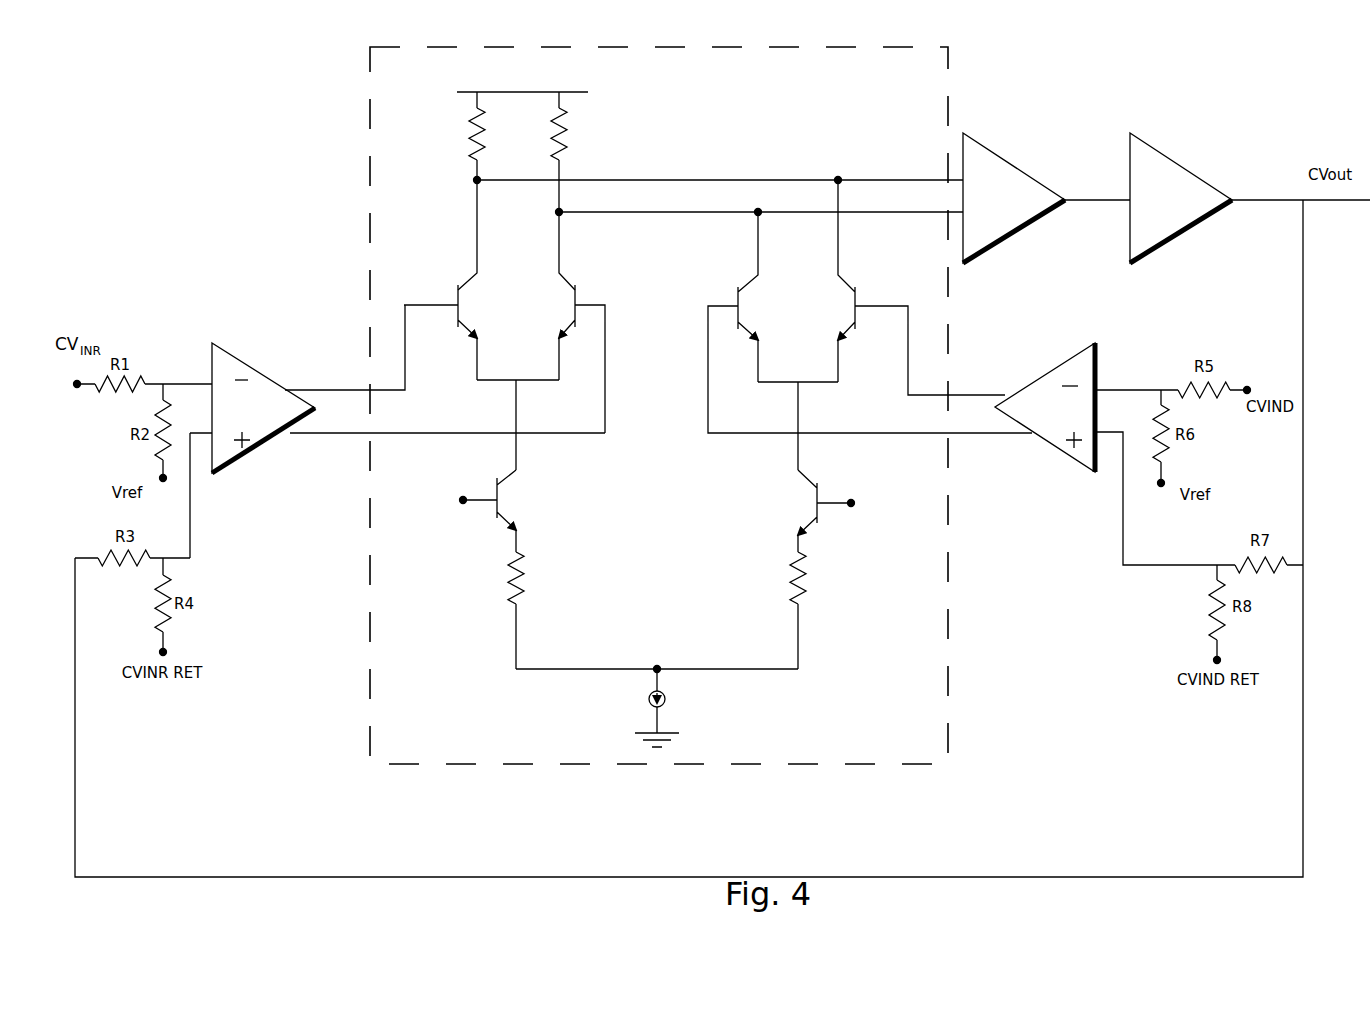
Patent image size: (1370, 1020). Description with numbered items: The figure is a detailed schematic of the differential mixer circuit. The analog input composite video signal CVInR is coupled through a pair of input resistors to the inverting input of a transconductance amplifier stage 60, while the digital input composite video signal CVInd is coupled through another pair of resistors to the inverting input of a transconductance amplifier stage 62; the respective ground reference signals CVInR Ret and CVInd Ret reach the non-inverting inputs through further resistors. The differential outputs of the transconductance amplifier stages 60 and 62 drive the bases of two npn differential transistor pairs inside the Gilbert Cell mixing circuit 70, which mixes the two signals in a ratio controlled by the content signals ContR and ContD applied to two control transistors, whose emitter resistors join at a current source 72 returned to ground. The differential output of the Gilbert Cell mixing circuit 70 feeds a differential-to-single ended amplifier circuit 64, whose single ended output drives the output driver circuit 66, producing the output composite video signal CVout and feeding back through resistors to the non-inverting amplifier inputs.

The transconductance amplifier stage 60 is at (258, 355).
The transconductance amplifier stage 62 is at (1060, 362).
The differential-to-single ended amplifier circuit 64 is at (998, 150).
The output driver circuit 66 is at (1170, 150).
The Gilbert Cell mixing circuit 70 is at (643, 86).
The current source 72 is at (667, 702).